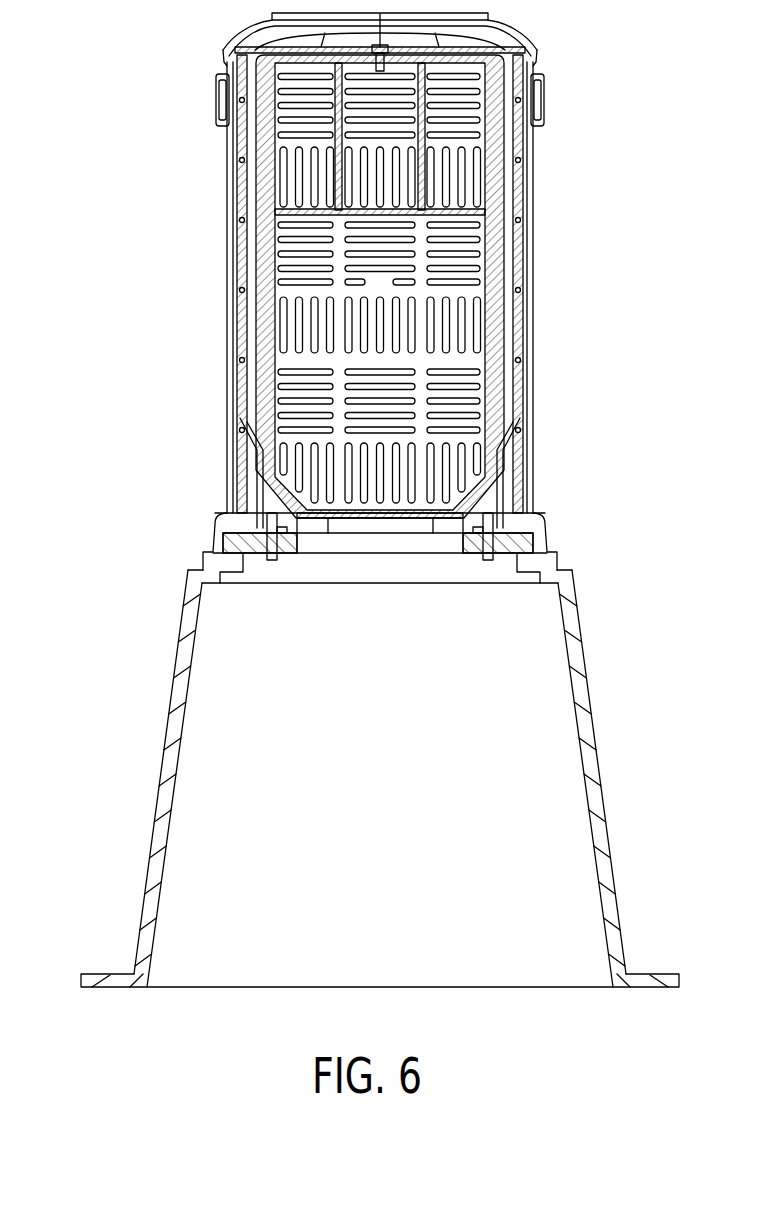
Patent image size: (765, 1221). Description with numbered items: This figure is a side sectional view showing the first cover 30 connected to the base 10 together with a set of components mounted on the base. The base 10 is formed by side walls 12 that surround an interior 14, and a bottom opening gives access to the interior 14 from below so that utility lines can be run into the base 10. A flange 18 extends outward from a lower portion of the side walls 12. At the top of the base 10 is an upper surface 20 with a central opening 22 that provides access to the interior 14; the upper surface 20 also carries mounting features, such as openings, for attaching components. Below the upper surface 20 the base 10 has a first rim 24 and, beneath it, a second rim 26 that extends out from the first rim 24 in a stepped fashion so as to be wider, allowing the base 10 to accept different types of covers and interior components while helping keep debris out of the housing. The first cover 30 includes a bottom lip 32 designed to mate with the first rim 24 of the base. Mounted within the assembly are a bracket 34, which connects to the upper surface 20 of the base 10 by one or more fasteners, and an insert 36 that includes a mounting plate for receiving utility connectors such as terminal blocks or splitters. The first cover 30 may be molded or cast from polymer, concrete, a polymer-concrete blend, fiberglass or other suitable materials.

The base 10 is at (371, 811).
The side walls 12 is at (153, 853).
The interior 14 is at (598, 916).
The flange 18 is at (88, 983).
The upper surface 20 is at (215, 517).
The central opening 22 is at (322, 545).
The first rim 24 is at (547, 548).
The second rim 26 is at (563, 568).
The first cover 30 is at (552, 190).
The bottom lip 32 is at (547, 523).
The bracket 34 is at (238, 235).
The insert 36 is at (443, 297).